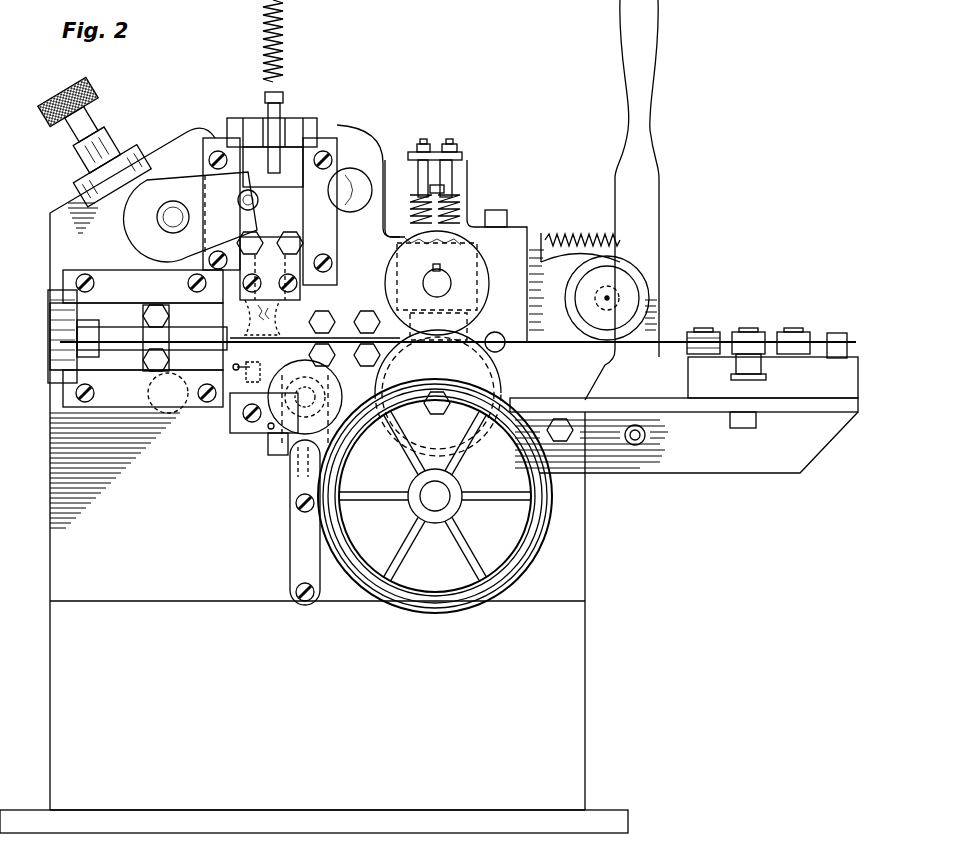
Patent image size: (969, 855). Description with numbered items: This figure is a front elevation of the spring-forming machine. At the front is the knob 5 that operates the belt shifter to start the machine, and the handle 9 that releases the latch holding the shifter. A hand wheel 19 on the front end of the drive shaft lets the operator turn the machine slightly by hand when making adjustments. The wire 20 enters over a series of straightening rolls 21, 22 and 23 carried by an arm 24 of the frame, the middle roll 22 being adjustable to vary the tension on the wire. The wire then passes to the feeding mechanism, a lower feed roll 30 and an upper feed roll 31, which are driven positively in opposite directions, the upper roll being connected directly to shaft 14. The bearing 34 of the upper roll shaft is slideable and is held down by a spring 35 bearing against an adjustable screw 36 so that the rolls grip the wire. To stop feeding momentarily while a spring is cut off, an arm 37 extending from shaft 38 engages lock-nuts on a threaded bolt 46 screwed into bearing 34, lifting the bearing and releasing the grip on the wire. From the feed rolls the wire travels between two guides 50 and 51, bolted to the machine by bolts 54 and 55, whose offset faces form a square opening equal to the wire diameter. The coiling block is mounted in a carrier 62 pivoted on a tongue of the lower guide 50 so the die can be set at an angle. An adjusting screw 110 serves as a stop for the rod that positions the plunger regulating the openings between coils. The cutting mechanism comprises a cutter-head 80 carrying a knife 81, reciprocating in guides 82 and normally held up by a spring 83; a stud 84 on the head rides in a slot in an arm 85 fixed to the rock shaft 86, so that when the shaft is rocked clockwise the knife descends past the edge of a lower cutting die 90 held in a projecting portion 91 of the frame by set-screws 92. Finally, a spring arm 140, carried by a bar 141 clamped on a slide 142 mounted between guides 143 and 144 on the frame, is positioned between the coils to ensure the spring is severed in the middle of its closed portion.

The knob 5 is at (640, 256).
The handle 9 is at (645, 70).
The shaft 14 is at (434, 276).
The hand wheel 19 is at (520, 556).
The wire 20 is at (553, 343).
The straightening roll 21 is at (796, 332).
The straightening roll 22 is at (750, 332).
The straightening roll 23 is at (701, 332).
The arm 24 is at (790, 452).
The lower feed roll 30 is at (500, 388).
The upper feed roll 31 is at (484, 264).
The bearing 34 is at (460, 305).
The spring 35 is at (462, 205).
The adjustable screw 36 is at (427, 146).
The arm 37 is at (416, 190).
The shaft 38 is at (348, 183).
The threaded bolt 46 is at (445, 152).
The guide 50 is at (340, 363).
The guide 51 is at (347, 312).
The bolt 54 is at (367, 366).
The bolt 55 is at (367, 313).
The carrier 62 is at (254, 370).
The cutter-head 80 is at (270, 243).
The knife 81 is at (258, 322).
The guides 82 is at (213, 137).
The spring 83 is at (280, 38).
The stud 84 is at (238, 200).
The arm 85 is at (193, 188).
The rock shaft 86 is at (160, 222).
The lower cutting die 90 is at (268, 443).
The projecting portion 91 is at (236, 418).
The set-screws 92 is at (272, 448).
The adjusting screw 110 is at (284, 470).
The spring arm 140 is at (305, 330).
The bar 141 is at (185, 340).
The slide 142 is at (130, 357).
The guide 143 is at (67, 393).
The guide 144 is at (67, 280).